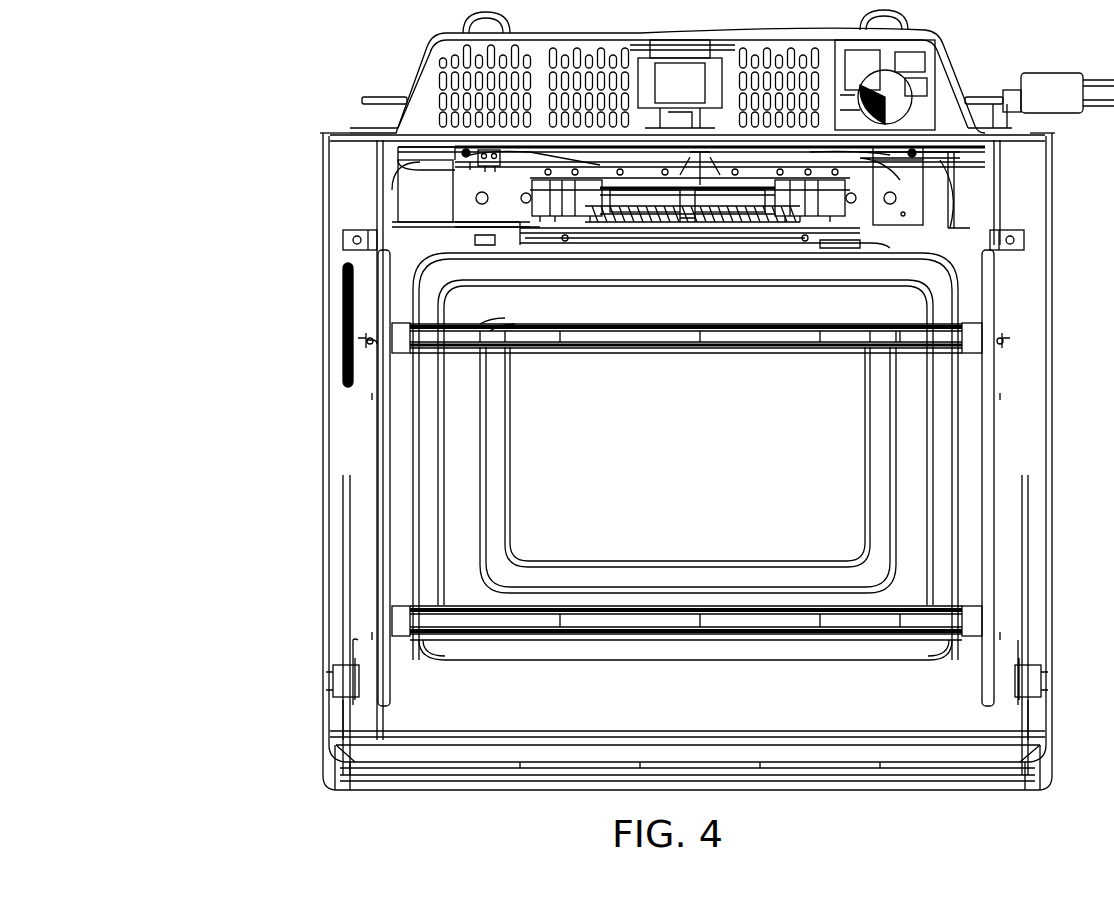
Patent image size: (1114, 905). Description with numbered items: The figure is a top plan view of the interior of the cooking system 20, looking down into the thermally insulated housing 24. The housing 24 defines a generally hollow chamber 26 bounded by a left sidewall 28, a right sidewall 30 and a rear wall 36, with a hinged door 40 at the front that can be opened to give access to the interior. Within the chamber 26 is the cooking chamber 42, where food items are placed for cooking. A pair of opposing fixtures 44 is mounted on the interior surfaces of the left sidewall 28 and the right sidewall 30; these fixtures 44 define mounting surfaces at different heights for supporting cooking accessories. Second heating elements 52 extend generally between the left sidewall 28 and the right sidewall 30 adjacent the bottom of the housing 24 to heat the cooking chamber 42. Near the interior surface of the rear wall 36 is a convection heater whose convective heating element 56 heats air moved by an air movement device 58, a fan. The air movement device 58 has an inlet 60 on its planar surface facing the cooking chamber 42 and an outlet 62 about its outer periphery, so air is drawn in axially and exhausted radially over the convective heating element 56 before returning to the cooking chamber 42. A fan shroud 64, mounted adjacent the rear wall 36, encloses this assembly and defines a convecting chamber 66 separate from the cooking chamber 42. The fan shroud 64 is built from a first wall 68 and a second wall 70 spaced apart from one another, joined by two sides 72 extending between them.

The cooking system 20 is at (176, 84).
The housing 24 is at (310, 128).
The chamber 26 is at (972, 398).
The left sidewall 28 is at (322, 192).
The right sidewall 30 is at (1052, 318).
The rear wall 36 is at (356, 130).
The door 40 is at (952, 781).
The cooking chamber 42 is at (708, 478).
The fixture 44 is at (377, 447).
The second heating element 52 is at (425, 350).
The convective heating element 56 is at (478, 203).
The air movement device 58 is at (762, 183).
The inlet 60 is at (573, 215).
The outlet 62 is at (840, 208).
The fan shroud 64 is at (436, 218).
The convecting chamber 66 is at (900, 184).
The first wall 68 is at (487, 232).
The second wall 70 is at (493, 170).
The sides 72 is at (450, 183).